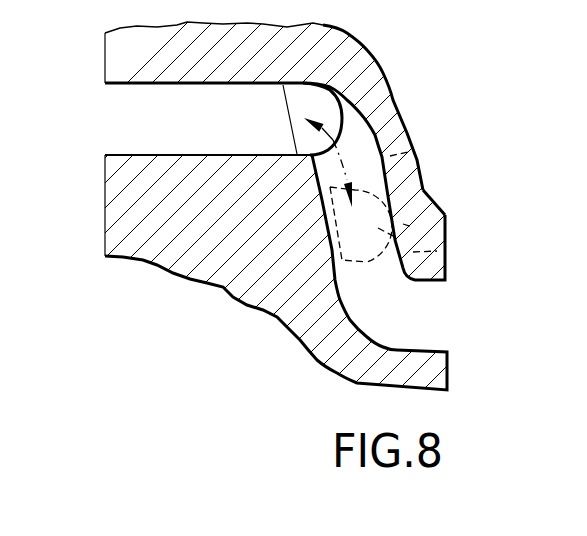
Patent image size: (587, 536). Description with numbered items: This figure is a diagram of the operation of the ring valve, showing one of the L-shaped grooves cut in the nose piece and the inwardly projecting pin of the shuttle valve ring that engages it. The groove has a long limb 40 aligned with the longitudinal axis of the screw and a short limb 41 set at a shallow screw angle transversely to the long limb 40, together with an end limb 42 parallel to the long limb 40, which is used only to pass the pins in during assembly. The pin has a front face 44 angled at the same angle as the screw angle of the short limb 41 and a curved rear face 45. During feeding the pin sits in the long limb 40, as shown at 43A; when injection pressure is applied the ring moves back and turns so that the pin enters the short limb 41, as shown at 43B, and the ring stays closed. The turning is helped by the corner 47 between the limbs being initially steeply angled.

The long limb 40 is at (192, 84).
The short limb 41 is at (401, 169).
The end limb 42 is at (436, 282).
The pin position in long limb 43A is at (378, 93).
The pin position in short limb 43B is at (423, 198).
The front face 44 is at (285, 110).
The rear face 45 is at (440, 250).
The corner 47 is at (370, 49).